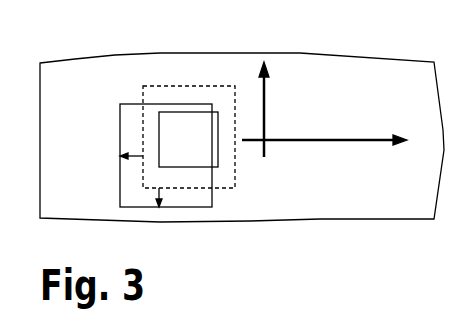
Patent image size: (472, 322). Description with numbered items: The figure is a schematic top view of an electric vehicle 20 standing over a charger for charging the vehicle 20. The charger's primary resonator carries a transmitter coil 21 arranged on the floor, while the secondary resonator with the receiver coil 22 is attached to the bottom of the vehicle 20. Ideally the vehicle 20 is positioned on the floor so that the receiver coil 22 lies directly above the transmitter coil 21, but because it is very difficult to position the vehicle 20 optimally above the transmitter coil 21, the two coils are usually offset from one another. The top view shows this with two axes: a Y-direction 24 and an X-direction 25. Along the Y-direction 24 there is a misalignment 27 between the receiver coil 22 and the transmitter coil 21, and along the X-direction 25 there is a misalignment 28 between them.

The electric vehicle 20 is at (96, 56).
The transmitter coil 21 is at (120, 188).
The receiver coil 22 is at (220, 152).
The Y-direction 24 is at (328, 139).
The X-direction 25 is at (266, 106).
The misalignment in Y-direction 27 is at (134, 156).
The misalignment in X-direction 28 is at (160, 196).